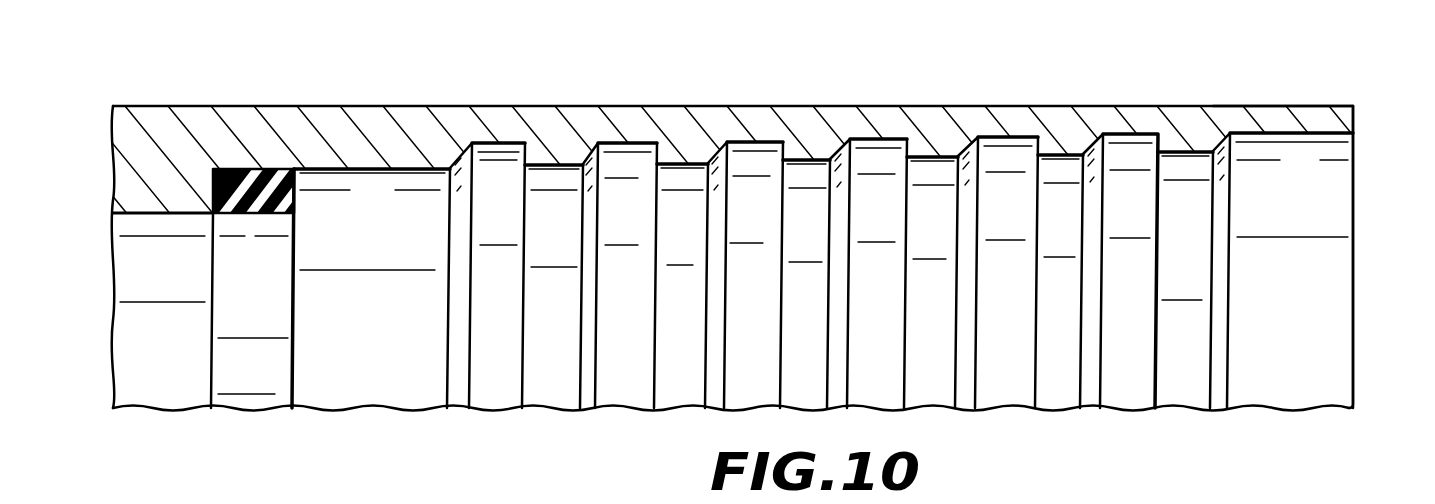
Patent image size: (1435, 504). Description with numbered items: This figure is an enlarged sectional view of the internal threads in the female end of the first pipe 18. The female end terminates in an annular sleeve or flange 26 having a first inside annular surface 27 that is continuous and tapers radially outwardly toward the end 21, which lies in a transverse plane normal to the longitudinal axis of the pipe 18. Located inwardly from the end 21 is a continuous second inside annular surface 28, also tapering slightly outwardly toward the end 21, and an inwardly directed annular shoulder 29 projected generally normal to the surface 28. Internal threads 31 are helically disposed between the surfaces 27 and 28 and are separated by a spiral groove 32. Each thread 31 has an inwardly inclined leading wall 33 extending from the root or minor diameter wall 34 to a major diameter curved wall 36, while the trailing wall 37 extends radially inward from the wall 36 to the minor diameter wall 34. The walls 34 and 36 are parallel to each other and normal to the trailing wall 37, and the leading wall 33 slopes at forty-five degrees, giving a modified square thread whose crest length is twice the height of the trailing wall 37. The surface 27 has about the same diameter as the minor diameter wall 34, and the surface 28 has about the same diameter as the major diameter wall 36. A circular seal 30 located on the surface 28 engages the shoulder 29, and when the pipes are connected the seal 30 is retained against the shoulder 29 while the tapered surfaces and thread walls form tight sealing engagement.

The pipe 18 is at (938, 123).
The end 21 is at (1353, 120).
The annular sleeve or flange 26 is at (1282, 118).
The first inside annular surface 27 is at (1318, 137).
The second inside annular surface 28 is at (386, 172).
The annular shoulder 29 is at (212, 195).
The circular seal 30 is at (253, 214).
The internal threads 31 is at (1066, 128).
The spiral groove 32 is at (874, 158).
The leading wall 33 is at (1113, 146).
The minor diameter wall 34 is at (1149, 140).
The major diameter curved wall 36 is at (1083, 153).
The trailing wall 37 is at (1034, 148).